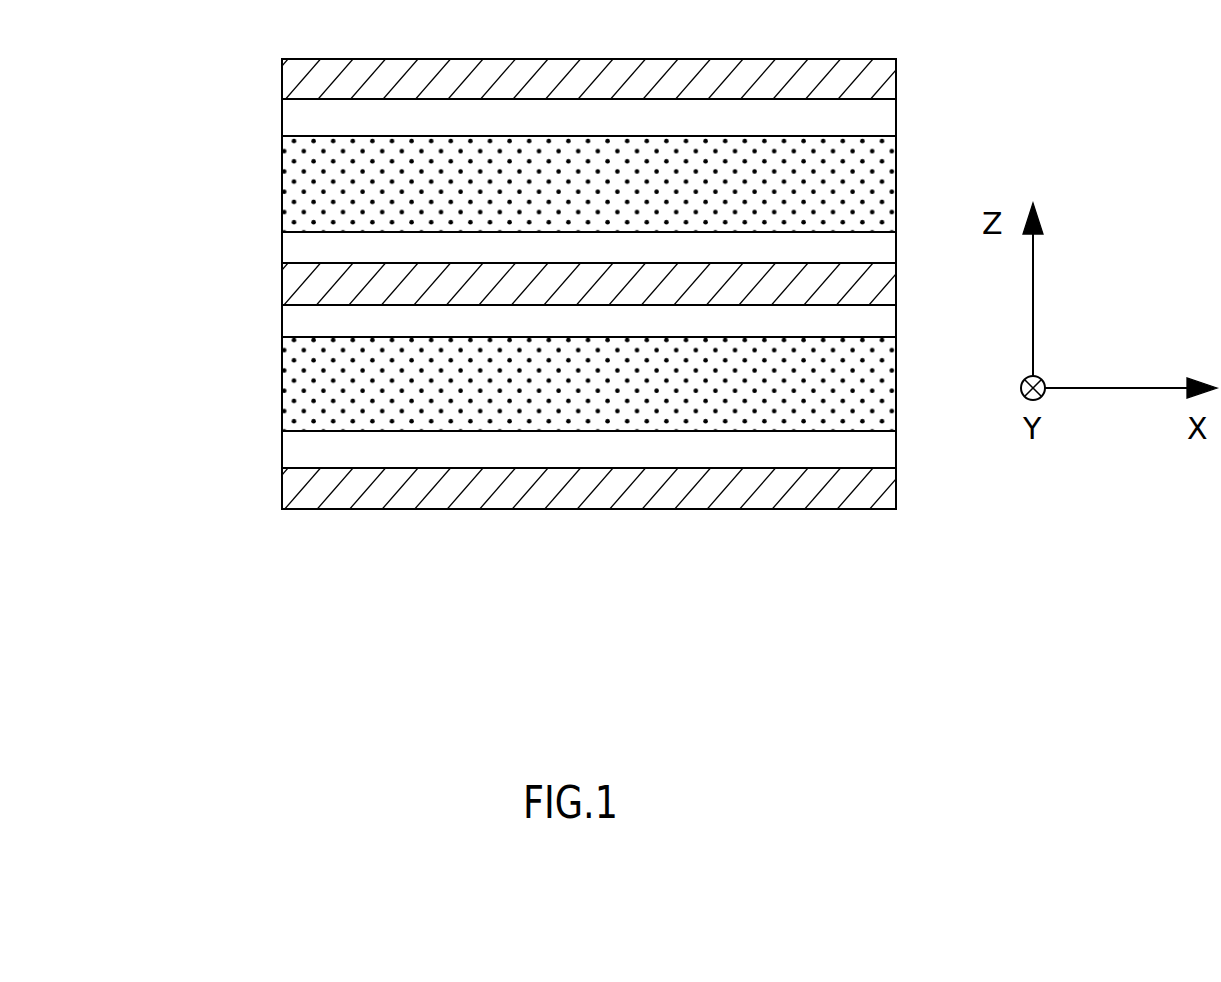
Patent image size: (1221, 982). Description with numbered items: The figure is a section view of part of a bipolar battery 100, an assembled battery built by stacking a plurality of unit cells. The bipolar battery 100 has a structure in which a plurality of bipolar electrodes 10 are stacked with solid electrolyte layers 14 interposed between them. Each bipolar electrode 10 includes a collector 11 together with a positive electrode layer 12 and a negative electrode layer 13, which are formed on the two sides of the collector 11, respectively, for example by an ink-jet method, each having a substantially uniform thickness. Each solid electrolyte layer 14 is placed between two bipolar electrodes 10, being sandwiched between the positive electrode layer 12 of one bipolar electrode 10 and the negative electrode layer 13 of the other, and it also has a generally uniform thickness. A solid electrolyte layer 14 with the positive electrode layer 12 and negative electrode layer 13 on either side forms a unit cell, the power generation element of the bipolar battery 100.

The bipolar battery 100 is at (368, 538).
The bipolar electrode 10 is at (153, 195).
The collector 11 is at (870, 78).
The positive electrode layer 12 is at (312, 243).
The negative electrode layer 13 is at (877, 122).
The solid electrolyte layer 14 is at (283, 181).